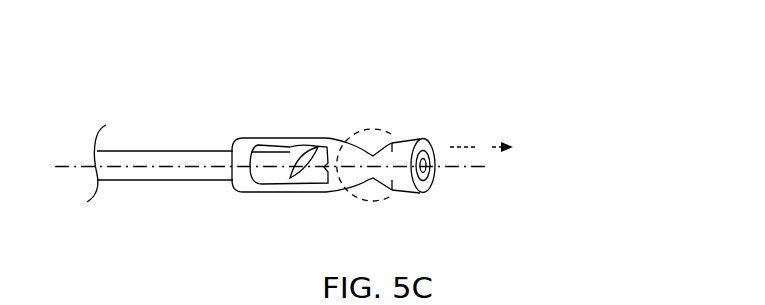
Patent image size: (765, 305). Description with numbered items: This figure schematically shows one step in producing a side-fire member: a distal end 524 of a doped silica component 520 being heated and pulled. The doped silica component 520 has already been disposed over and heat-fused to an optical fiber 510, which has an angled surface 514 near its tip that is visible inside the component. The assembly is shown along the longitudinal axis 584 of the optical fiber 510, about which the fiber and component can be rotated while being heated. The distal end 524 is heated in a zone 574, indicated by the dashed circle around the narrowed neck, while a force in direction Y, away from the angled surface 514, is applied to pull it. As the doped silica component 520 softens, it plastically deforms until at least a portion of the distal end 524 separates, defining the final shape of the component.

The optical fiber 510 is at (213, 152).
The doped silica component 520 is at (339, 137).
The angled surface 514 is at (301, 172).
The zone 574 is at (377, 128).
The distal end 524 is at (418, 128).
The longitudinal axis 584 is at (453, 169).